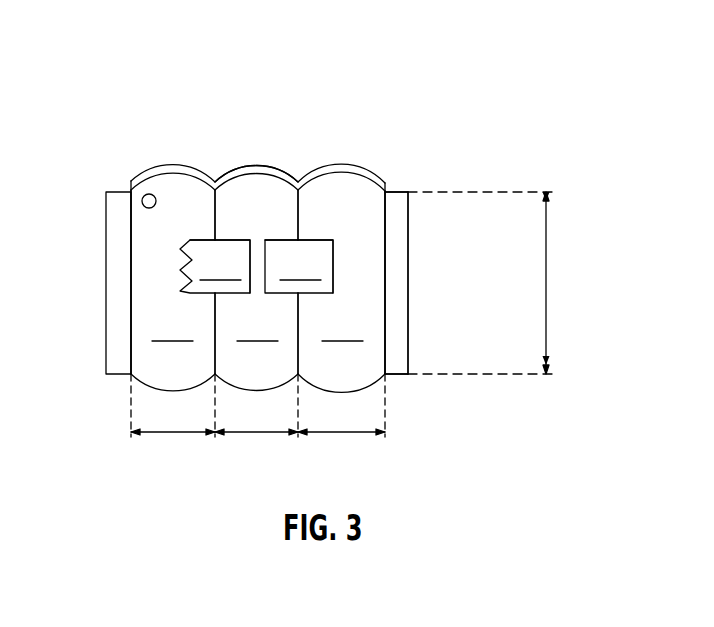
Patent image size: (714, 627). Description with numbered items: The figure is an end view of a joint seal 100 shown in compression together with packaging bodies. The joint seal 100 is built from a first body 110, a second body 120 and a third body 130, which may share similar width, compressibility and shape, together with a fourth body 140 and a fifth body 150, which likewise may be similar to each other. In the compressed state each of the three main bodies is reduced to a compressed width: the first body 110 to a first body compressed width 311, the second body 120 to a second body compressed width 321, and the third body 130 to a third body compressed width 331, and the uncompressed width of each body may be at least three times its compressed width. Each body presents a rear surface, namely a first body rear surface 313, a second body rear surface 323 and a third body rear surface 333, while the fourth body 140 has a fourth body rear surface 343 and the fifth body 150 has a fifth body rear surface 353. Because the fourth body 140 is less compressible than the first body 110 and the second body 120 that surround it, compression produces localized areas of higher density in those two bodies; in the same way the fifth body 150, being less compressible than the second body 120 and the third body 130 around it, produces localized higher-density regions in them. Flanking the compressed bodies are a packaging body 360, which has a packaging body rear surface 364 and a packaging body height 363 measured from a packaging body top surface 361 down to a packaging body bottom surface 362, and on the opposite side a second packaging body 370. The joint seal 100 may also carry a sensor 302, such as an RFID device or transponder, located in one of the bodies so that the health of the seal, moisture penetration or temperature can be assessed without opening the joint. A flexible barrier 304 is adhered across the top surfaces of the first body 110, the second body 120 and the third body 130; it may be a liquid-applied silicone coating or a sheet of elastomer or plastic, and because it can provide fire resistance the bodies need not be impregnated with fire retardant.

The joint seal 100 is at (529, 128).
The first body 110 is at (323, 360).
The second body 120 is at (238, 360).
The third body 130 is at (158, 360).
The fourth body 140 is at (317, 247).
The fifth body 150 is at (239, 247).
The sensor 302 is at (148, 194).
The flexible barrier 304 is at (260, 165).
The first body compressed width 311 is at (343, 437).
The first body rear surface 313 is at (342, 326).
The second body compressed width 321 is at (258, 437).
The second body rear surface 323 is at (257, 326).
The third body compressed width 331 is at (172, 437).
The third body rear surface 333 is at (172, 326).
The fourth body rear surface 343 is at (299, 266).
The fifth body rear surface 353 is at (215, 266).
The packaging body 360 is at (397, 335).
The packaging body top surface 361 is at (395, 191).
The packaging body bottom surface 362 is at (397, 335).
The packaging body height 363 is at (546, 283).
The packaging body rear surface 364 is at (397, 278).
The second packaging body 370 is at (120, 347).